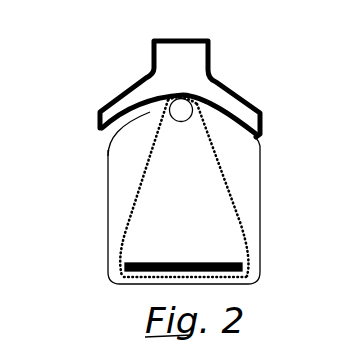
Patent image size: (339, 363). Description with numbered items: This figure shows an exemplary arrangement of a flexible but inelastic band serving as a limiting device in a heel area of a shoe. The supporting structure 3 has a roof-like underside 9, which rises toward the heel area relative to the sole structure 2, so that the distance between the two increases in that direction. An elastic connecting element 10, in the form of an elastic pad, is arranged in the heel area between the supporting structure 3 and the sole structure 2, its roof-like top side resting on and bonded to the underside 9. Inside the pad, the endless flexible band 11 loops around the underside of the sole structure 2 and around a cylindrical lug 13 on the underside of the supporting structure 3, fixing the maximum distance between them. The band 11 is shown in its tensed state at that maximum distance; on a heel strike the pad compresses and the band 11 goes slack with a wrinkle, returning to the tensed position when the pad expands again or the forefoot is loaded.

The sole structure 2 is at (228, 268).
The supporting structure 3 is at (146, 75).
The underside 9 is at (107, 150).
The elastic connecting element 10 is at (106, 195).
The flexible band 11 is at (227, 174).
The cylindrical lug 13 is at (183, 109).